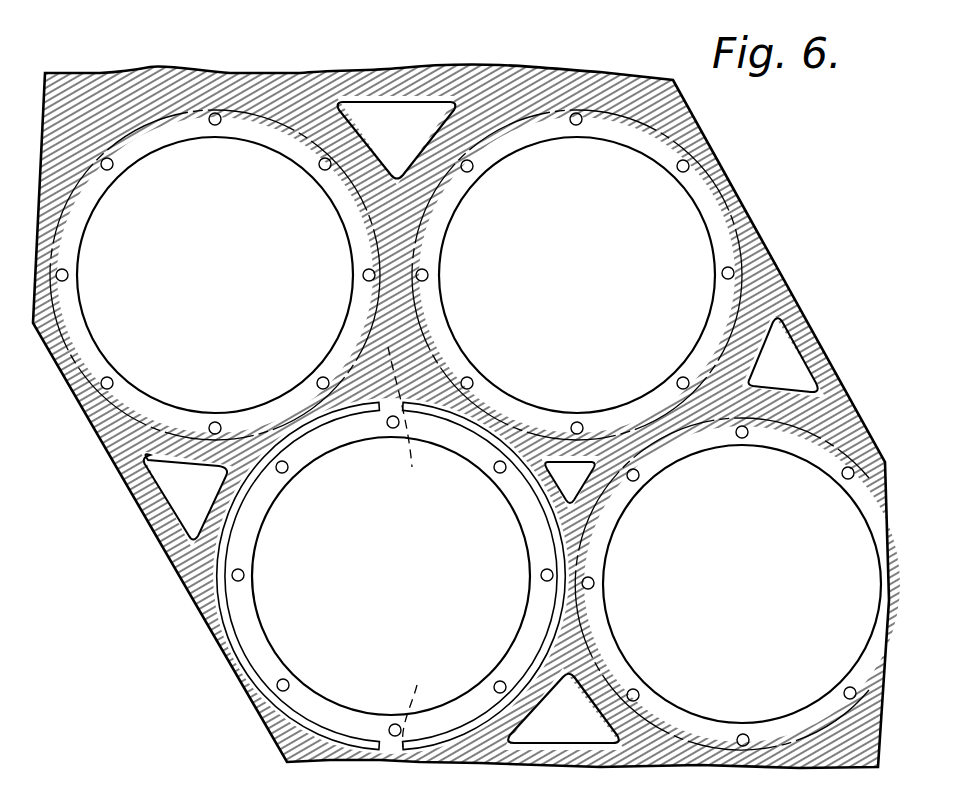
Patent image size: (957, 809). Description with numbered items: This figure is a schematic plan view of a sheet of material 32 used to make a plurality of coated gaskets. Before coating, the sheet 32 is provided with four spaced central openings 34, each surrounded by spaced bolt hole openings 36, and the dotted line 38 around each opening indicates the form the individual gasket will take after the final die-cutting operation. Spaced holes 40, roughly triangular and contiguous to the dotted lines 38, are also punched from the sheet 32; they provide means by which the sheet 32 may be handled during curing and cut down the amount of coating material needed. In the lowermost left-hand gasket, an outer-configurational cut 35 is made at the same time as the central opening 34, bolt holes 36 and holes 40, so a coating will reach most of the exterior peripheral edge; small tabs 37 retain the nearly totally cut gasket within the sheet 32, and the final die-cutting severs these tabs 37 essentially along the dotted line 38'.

The sheet of material 32 is at (240, 717).
The central openings 34 is at (90, 333).
The outer-configurational cut 35 is at (547, 513).
The bolt hole openings 36 is at (212, 125).
The tabs 37 is at (397, 407).
The dotted line 38 is at (459, 430).
The dotted line 38' is at (418, 547).
The spaced holes 40 is at (402, 117).